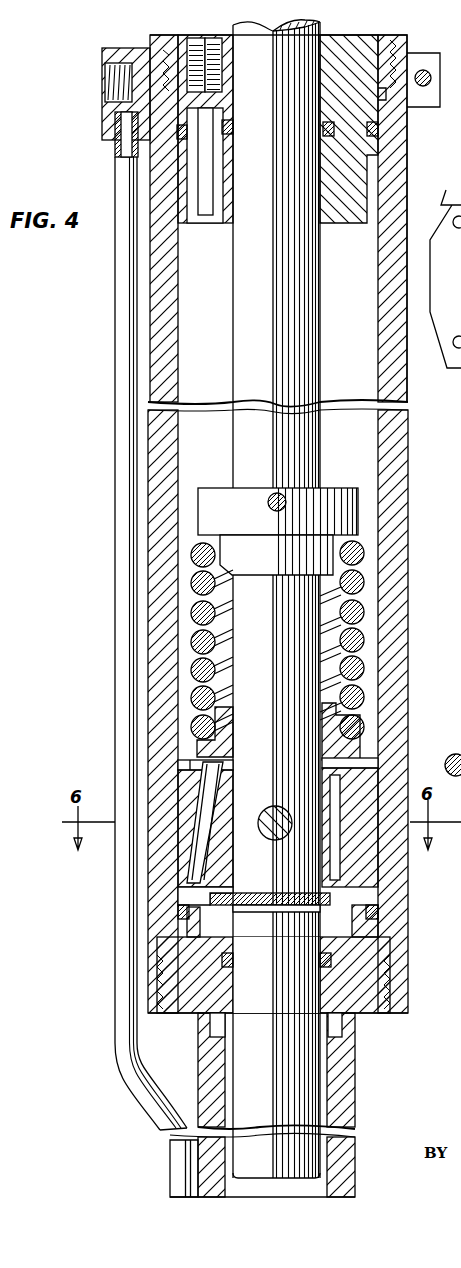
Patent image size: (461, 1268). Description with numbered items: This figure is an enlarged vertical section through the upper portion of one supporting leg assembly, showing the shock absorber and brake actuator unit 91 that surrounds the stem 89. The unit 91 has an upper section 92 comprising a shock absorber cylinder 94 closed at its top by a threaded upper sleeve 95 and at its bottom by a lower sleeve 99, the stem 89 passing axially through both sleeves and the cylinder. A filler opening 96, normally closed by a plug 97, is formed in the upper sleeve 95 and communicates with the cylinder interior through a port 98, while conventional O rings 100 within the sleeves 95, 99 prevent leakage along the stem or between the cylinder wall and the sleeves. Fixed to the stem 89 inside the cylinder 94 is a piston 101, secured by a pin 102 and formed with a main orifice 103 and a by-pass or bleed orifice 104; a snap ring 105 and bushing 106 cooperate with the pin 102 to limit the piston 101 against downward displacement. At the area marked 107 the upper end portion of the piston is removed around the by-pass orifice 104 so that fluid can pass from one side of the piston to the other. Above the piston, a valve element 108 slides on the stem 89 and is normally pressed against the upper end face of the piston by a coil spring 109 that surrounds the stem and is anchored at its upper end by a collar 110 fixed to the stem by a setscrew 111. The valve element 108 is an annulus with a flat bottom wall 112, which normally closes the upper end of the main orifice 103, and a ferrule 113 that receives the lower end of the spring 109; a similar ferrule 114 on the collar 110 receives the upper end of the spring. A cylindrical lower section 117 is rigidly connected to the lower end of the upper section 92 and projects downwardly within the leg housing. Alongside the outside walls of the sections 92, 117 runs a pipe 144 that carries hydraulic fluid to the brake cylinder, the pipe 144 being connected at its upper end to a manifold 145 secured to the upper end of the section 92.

The stem 89 is at (305, 258).
The shock absorber and brake actuator unit 91 is at (416, 178).
The upper section 92 is at (408, 452).
The shock absorber cylinder 94 is at (376, 368).
The upper sleeve 95 is at (340, 48).
The filler opening 96 is at (192, 38).
The plug 97 is at (222, 28).
The port 98 is at (204, 215).
The lower sleeve 99 is at (375, 992).
The O rings 100 is at (378, 133).
The piston 101 is at (365, 860).
The pin 102 is at (266, 812).
The main orifice 103 is at (215, 875).
The by-pass orifice 104 is at (338, 877).
The snap ring 105 is at (227, 900).
The bushing 106 is at (208, 893).
The removed upper end portion of the piston 107 is at (360, 766).
The valve element 108 is at (342, 723).
The coil spring 109 is at (366, 634).
The collar 110 is at (356, 505).
The setscrew 111 is at (286, 502).
The flat bottom wall 112 is at (195, 775).
The ferrule 113 is at (195, 727).
The ferrule 114 is at (360, 551).
The lower section 117 is at (357, 1066).
The pipe 144 is at (120, 476).
The manifold 145 is at (104, 133).